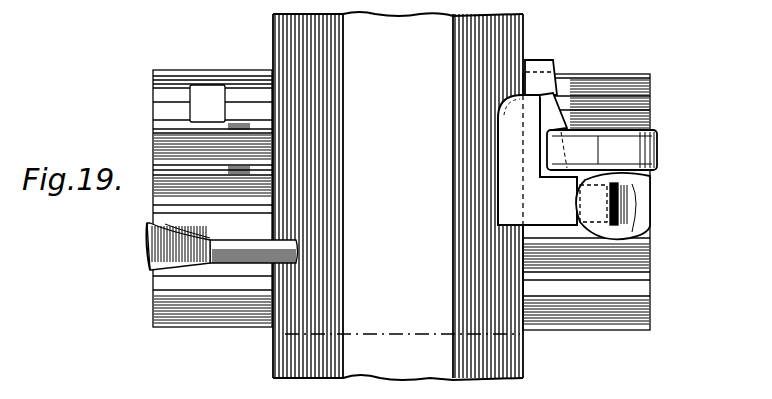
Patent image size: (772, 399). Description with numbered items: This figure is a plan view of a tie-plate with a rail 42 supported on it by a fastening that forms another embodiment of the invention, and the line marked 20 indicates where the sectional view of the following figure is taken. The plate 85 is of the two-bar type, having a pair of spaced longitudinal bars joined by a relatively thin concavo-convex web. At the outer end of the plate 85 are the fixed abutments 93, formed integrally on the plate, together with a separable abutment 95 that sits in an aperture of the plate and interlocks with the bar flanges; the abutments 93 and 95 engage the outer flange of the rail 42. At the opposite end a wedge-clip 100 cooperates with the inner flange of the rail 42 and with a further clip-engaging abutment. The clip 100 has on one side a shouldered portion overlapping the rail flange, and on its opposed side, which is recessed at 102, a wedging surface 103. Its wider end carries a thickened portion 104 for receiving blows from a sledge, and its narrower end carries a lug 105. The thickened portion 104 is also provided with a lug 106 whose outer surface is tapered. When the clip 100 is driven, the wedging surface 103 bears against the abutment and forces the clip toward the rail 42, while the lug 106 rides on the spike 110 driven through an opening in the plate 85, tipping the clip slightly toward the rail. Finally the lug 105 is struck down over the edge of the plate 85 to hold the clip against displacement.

The section line 20 is at (130, 278).
The rail 42 is at (398, 196).
The plate 85 is at (632, 253).
The fixed abutments 93 is at (250, 170).
The abutment 95 is at (247, 247).
The wedge-clip 100 is at (514, 163).
The recess 102 is at (551, 117).
The wedging surface 103 is at (566, 127).
The thickened portion 104 is at (537, 201).
The lug 105 is at (541, 62).
The lug 106 is at (613, 203).
The spike 110 is at (635, 215).